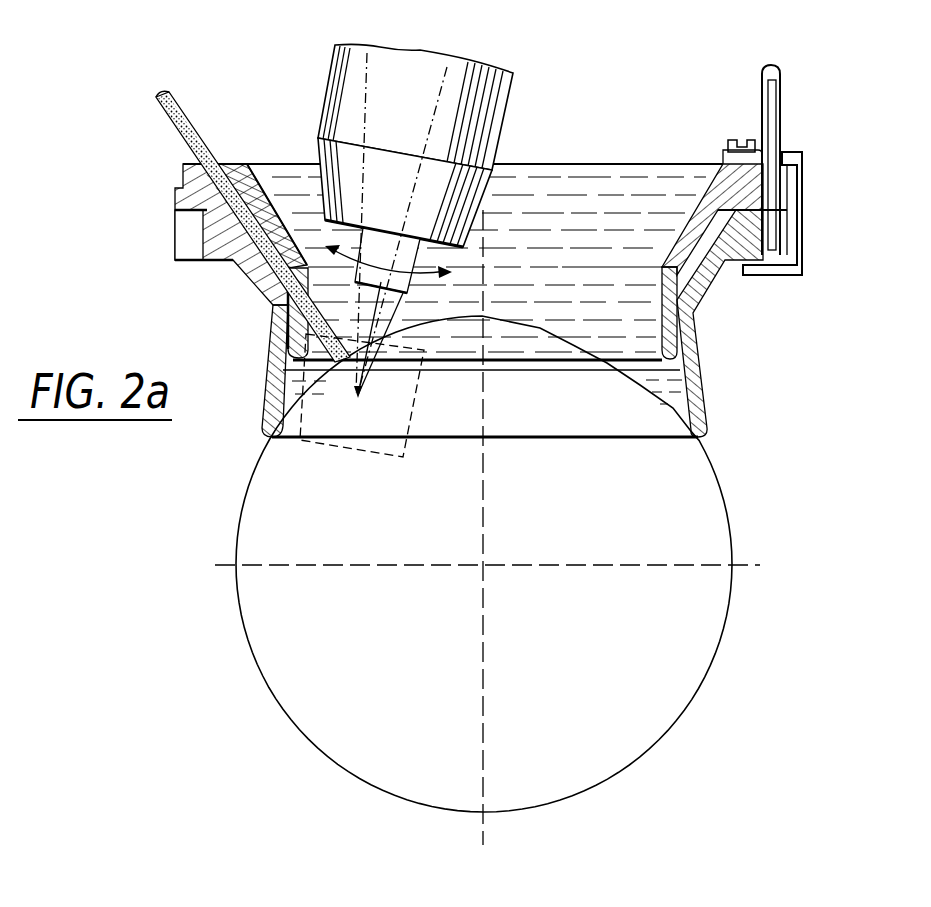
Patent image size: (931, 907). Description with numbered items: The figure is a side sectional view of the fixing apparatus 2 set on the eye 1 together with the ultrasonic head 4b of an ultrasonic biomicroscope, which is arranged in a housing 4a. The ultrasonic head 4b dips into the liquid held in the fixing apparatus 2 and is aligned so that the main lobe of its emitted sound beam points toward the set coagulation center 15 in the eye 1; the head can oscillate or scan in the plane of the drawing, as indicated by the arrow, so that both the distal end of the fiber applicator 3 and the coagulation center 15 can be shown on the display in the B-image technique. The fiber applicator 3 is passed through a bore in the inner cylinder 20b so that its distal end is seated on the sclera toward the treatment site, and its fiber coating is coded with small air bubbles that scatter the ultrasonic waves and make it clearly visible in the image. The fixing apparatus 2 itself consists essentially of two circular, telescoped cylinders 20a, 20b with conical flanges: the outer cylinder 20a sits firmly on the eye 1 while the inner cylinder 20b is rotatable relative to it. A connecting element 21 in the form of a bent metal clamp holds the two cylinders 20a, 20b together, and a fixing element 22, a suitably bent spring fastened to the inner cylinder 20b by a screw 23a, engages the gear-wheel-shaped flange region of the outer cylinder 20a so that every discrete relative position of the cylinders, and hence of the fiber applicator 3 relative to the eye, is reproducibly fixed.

The eye 1 is at (719, 661).
The fixing apparatus 2 is at (514, 265).
The fiber applicator 3 is at (175, 135).
The housing 4a is at (323, 106).
The ultrasonic head 4b is at (343, 229).
The coagulation center 15 is at (357, 395).
The outer cylinder 20a is at (708, 413).
The inner cylinder 20b is at (717, 183).
The connecting element 21 is at (797, 238).
The fixing element 22 is at (778, 97).
The screw 23a is at (735, 139).